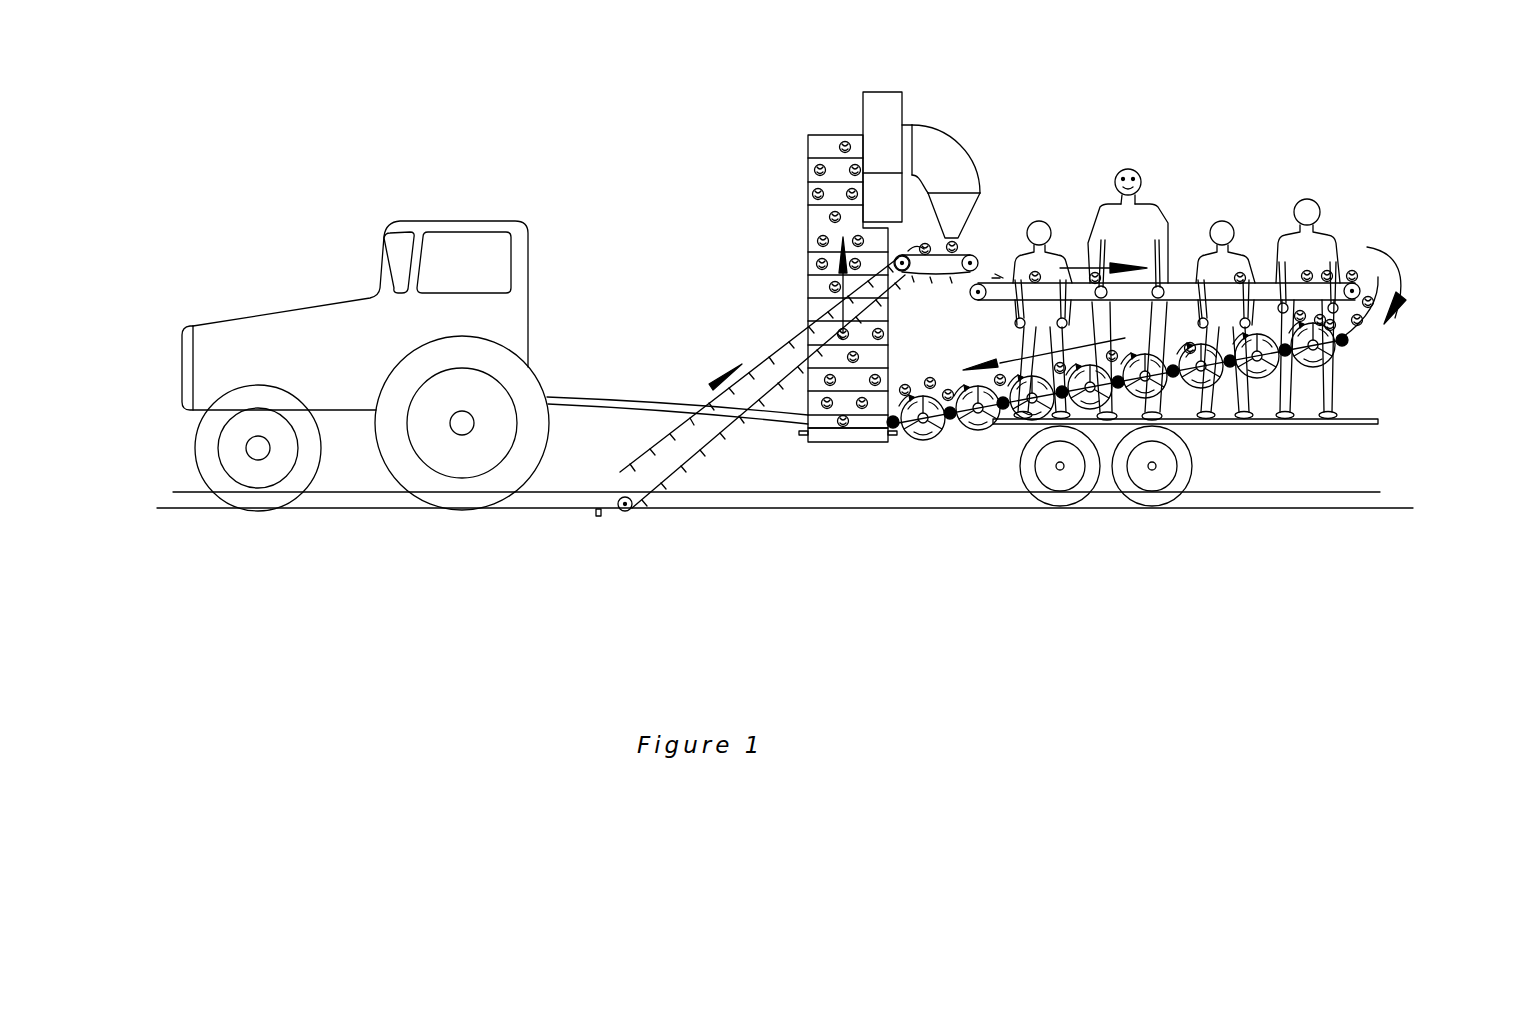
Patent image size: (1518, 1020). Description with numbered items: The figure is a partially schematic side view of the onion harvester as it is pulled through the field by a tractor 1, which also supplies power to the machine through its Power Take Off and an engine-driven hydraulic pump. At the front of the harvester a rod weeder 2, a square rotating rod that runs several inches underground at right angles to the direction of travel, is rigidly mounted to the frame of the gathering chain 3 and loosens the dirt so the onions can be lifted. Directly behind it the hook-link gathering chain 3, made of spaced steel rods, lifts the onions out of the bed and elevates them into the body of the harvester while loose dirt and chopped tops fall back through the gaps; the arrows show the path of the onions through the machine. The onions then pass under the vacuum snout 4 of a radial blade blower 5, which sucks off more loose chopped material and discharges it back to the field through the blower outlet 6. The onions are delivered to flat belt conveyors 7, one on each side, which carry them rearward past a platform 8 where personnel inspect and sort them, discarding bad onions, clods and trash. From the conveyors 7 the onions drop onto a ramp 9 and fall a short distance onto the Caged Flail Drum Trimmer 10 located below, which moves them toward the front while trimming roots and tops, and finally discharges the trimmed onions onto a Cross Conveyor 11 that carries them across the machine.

The tractor 1 is at (494, 339).
The rod weeder 2 is at (531, 573).
The gathering chain 3 is at (763, 383).
The vacuum snout 4 is at (977, 230).
The radial blade blower 5 is at (936, 113).
The blower outlet 6 is at (966, 163).
The flat belt conveyors 7 is at (1165, 239).
The platform 8 is at (1239, 412).
The ramp 9 is at (1403, 267).
The Caged Flail Drum Trimmer 10 is at (1117, 448).
The Cross Conveyor 11 is at (848, 360).